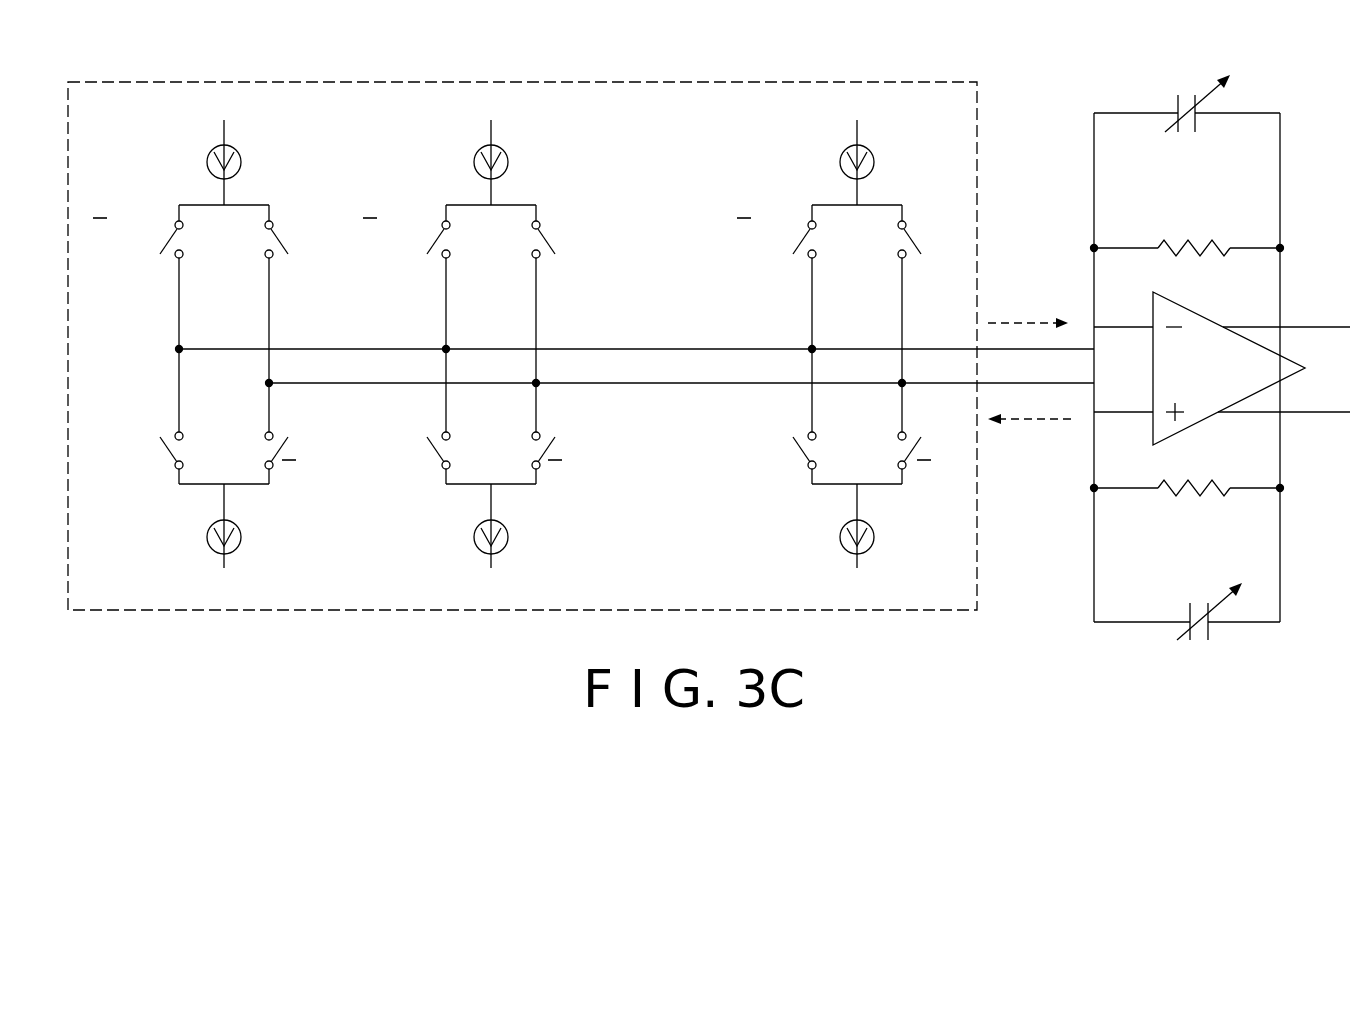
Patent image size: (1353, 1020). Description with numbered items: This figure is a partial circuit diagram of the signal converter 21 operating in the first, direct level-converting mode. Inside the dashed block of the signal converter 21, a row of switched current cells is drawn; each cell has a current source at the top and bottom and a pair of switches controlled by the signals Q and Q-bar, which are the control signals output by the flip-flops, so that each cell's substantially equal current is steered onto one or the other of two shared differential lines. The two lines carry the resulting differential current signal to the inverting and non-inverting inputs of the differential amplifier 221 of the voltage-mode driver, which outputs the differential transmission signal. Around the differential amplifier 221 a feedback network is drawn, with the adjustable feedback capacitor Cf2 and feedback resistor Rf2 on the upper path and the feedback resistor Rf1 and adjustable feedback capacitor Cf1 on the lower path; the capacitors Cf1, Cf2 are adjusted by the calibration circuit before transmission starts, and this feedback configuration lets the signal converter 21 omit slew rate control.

The signal converter 21 is at (885, 612).
The differential amplifier 221 is at (1278, 352).
The feedback capacitor Cf1 is at (1187, 609).
The feedback capacitor Cf2 is at (1187, 116).
The feedback resistor Rf1 is at (1187, 502).
The feedback resistor Rf2 is at (1187, 232).